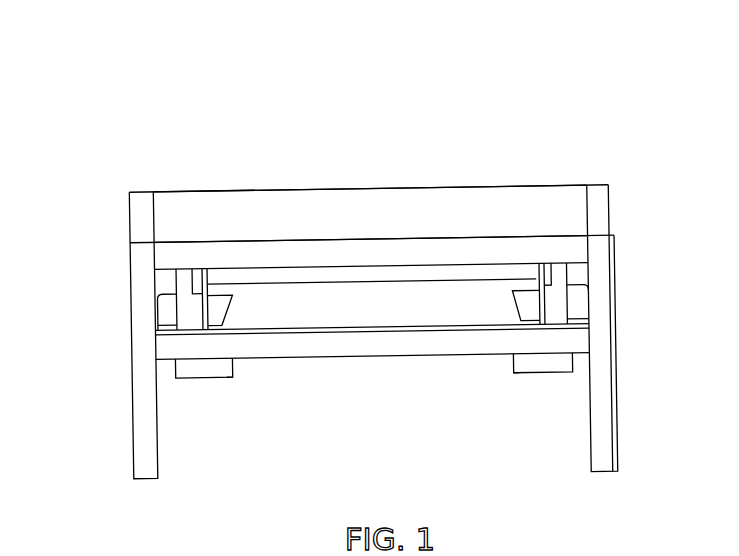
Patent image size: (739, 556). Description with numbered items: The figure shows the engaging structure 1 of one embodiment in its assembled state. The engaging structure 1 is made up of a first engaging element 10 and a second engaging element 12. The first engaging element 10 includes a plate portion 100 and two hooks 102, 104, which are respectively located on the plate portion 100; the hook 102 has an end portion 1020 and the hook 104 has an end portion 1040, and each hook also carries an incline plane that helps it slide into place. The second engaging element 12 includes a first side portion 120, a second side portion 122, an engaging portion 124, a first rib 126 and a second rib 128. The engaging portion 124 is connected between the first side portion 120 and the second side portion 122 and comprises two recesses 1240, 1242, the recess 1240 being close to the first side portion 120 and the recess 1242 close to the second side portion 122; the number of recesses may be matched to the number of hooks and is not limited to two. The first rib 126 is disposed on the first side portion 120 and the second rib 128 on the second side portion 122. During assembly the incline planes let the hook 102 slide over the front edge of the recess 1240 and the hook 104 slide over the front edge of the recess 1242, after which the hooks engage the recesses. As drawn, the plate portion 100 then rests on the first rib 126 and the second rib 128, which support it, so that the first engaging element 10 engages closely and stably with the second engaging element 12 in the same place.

The engaging structure 1 is at (422, 79).
The first engaging element 10 is at (476, 178).
The plate portion 100 is at (216, 189).
The second engaging element 12 is at (636, 246).
The first side portion 120 is at (131, 363).
The second side portion 122 is at (616, 352).
The engaging portion 124 is at (384, 357).
The recess 1240 is at (226, 317).
The recess 1242 is at (517, 313).
The first rib 126 is at (172, 284).
The second rib 128 is at (574, 277).
The hook 102 is at (198, 381).
The end portion 1020 is at (230, 372).
The hook 104 is at (545, 376).
The end portion 1040 is at (518, 370).